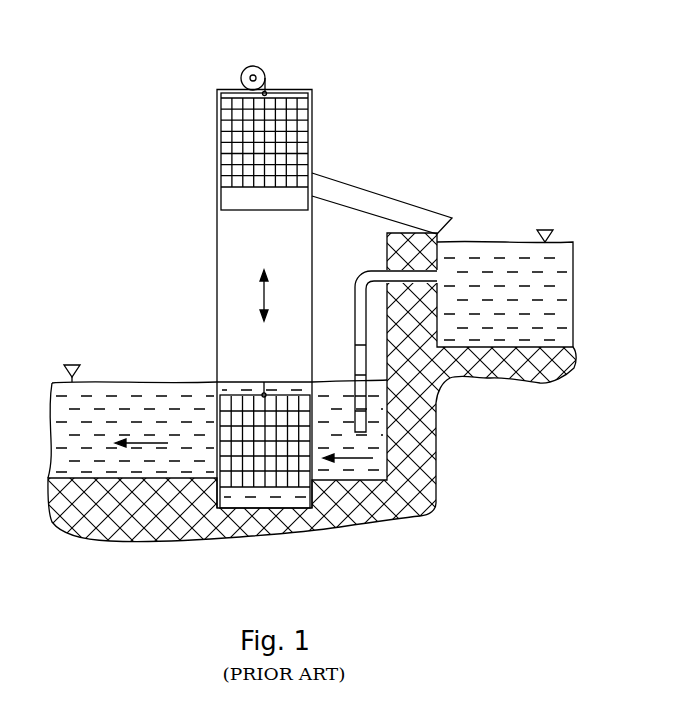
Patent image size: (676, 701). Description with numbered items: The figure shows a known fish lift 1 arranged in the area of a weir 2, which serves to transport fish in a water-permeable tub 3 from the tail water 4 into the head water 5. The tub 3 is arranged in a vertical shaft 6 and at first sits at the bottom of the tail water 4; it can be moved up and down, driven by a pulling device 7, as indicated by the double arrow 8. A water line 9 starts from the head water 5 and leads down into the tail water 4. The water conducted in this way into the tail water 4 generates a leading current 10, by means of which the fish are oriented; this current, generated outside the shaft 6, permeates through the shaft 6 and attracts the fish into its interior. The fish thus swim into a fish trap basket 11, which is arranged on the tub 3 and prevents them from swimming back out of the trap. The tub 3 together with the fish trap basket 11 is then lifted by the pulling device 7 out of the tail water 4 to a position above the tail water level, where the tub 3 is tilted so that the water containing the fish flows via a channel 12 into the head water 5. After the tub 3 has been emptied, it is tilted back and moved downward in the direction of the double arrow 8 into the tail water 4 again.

The fish lift 1 is at (136, 126).
The weir 2 is at (382, 500).
The water-permeable tub 3 is at (247, 195).
The tail water 4 is at (100, 410).
The head water 5 is at (486, 267).
The vertical shaft 6 is at (216, 351).
The pulling device 7 is at (245, 70).
The double arrow 8 is at (262, 293).
The water line 9 is at (363, 358).
The leading current 10 is at (358, 460).
The fish trap basket 11 is at (289, 130).
The channel 12 is at (337, 193).